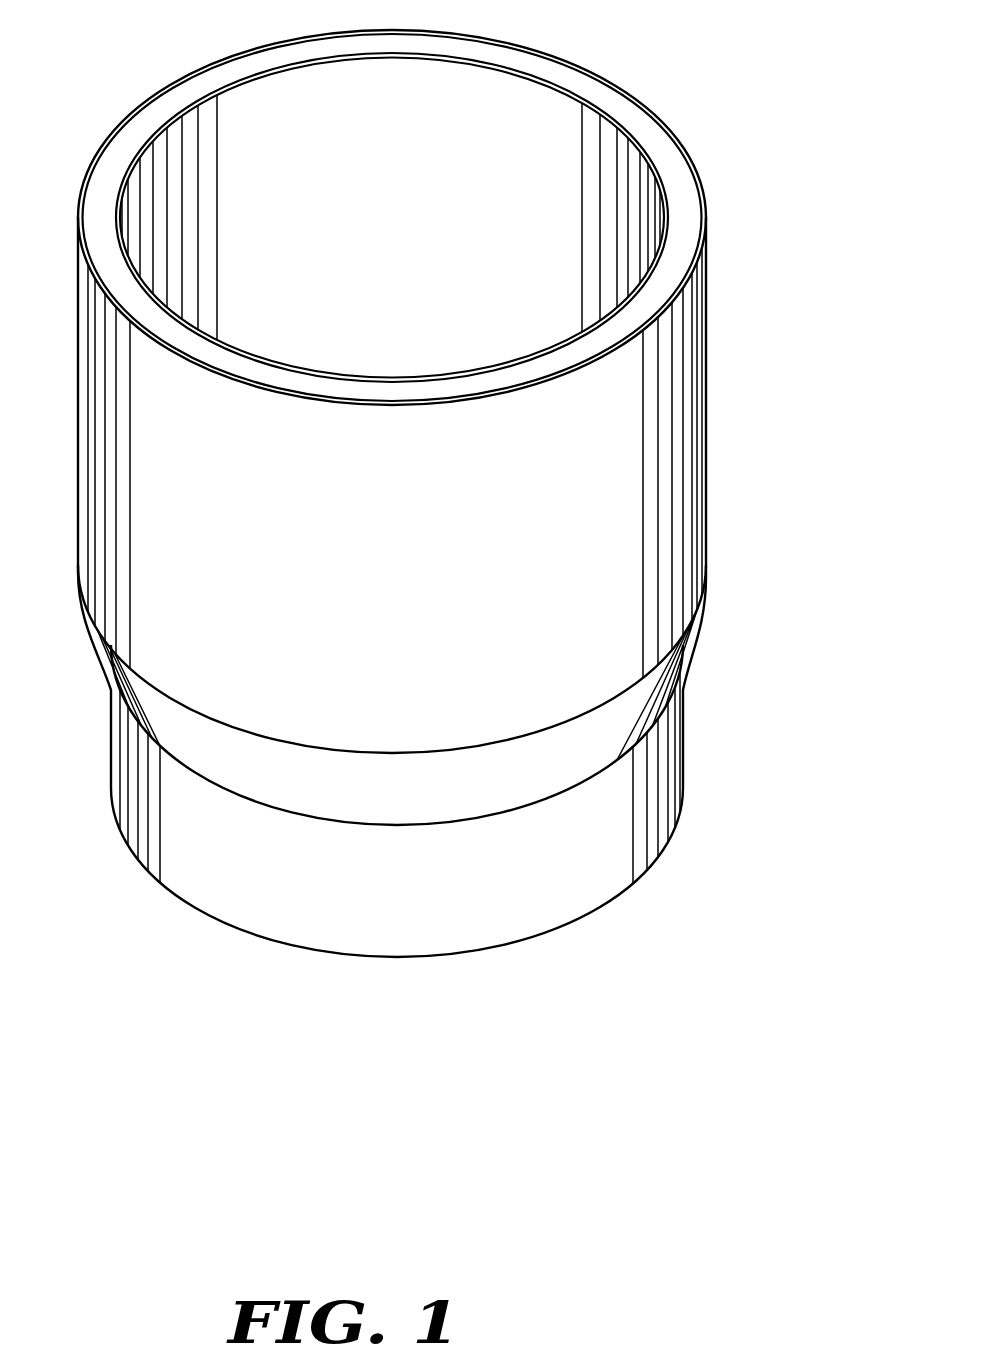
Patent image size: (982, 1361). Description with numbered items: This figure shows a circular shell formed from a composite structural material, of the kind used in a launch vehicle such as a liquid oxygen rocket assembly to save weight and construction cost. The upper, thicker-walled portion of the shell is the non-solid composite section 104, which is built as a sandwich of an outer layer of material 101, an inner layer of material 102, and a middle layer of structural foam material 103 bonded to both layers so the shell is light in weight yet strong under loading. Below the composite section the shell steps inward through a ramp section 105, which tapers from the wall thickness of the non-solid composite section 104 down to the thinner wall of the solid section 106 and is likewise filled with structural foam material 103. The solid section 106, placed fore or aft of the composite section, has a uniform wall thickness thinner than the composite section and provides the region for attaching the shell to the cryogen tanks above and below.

The outer layer of material 101 is at (653, 117).
The inner layer of material 102 is at (552, 83).
The structural foam material 103 is at (682, 202).
The non-solid composite section 104 is at (688, 479).
The ramp section 105 is at (668, 673).
The solid section 106 is at (663, 768).